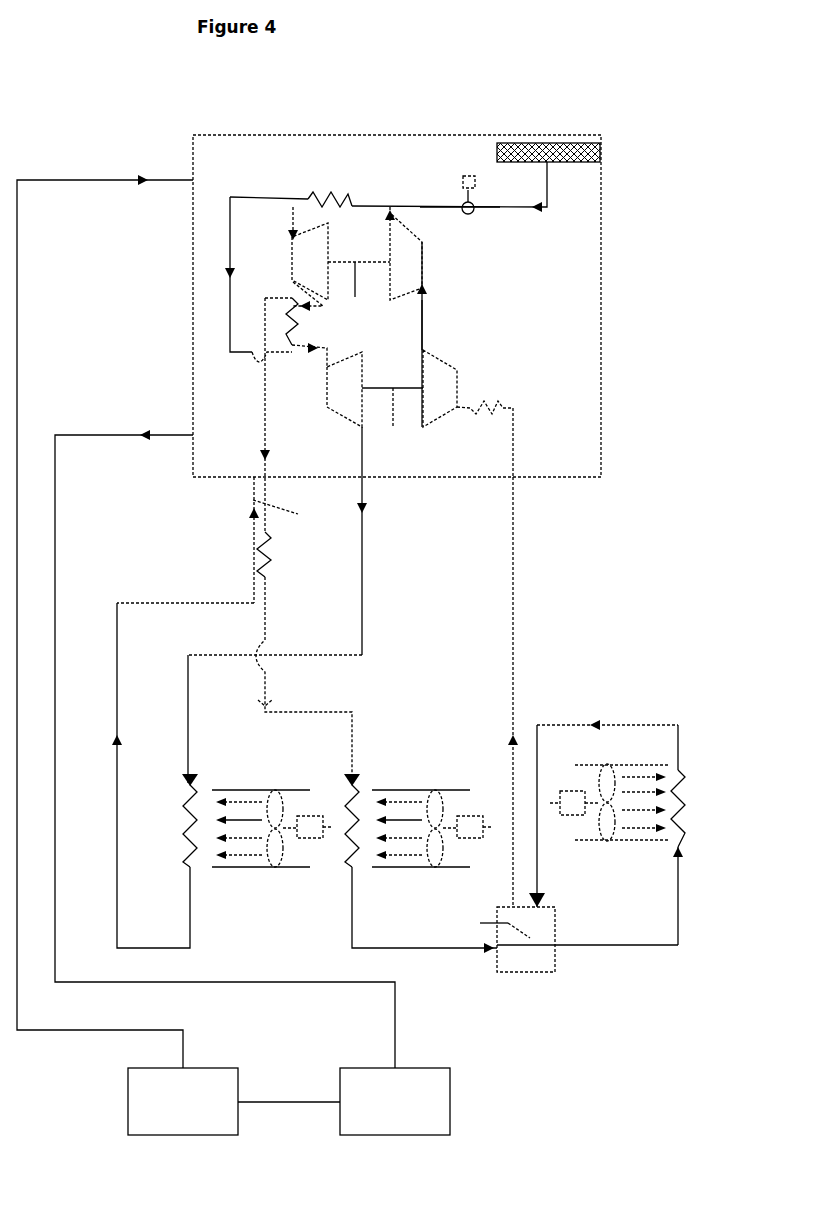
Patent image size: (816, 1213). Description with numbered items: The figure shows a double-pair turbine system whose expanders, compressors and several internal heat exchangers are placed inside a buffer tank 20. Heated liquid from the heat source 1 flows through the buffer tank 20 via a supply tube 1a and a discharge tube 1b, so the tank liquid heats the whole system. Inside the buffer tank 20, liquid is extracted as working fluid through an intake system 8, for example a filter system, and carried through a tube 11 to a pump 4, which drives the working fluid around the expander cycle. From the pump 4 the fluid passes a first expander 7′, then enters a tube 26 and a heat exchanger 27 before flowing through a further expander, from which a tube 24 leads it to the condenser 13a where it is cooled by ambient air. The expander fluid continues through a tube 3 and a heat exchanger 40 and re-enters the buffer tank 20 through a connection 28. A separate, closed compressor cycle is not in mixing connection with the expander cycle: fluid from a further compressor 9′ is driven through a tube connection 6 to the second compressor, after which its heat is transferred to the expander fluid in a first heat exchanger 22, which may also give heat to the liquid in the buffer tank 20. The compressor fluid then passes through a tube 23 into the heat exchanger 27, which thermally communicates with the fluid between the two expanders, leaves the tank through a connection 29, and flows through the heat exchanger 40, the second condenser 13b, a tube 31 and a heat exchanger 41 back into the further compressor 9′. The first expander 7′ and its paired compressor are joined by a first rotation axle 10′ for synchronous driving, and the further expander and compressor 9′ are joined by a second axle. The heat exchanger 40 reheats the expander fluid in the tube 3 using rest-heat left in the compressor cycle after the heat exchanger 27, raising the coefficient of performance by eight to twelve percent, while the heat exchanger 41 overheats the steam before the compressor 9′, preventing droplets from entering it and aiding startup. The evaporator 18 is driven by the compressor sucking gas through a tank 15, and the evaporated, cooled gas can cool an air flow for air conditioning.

The heat source 1 is at (128, 1102).
The supply tube 1a is at (192, 183).
The discharge tube 1b is at (186, 427).
The tube 3 is at (205, 603).
The pump 4 is at (470, 172).
The tube connection 6 is at (428, 320).
The first expander 7′ is at (308, 253).
The intake system 8 is at (548, 157).
The further compressor 9′ is at (440, 388).
The first rotation axle 10′ is at (343, 262).
The tube 11 is at (500, 205).
The condenser 13a is at (232, 787).
The condenser 13b is at (412, 787).
The tank 15 is at (497, 955).
The evaporator 18 is at (683, 775).
The buffer tank 20 is at (267, 155).
The first heat exchanger 22 is at (312, 187).
The tube 23 is at (278, 193).
The tube 24 is at (368, 568).
The tube 26 is at (325, 308).
The heat exchanger 27 is at (290, 298).
The connection 28 is at (253, 484).
The connection 29 is at (298, 514).
The tube 31 is at (518, 580).
The heat exchanger 40 is at (270, 577).
The heat exchanger 41 is at (480, 417).